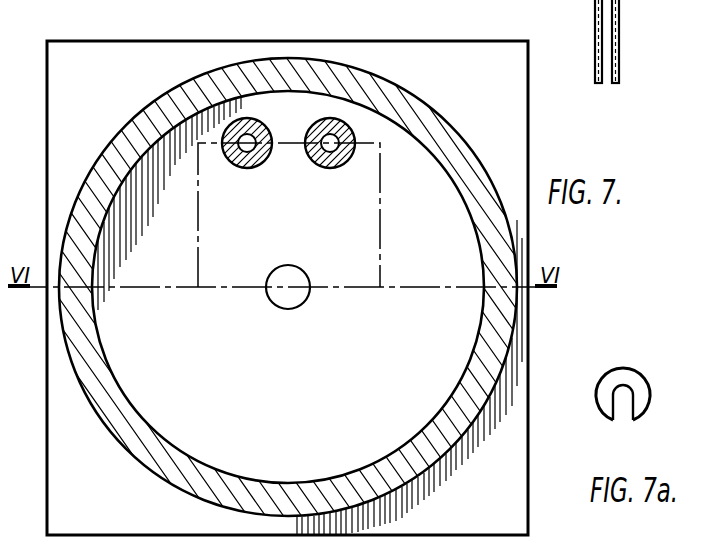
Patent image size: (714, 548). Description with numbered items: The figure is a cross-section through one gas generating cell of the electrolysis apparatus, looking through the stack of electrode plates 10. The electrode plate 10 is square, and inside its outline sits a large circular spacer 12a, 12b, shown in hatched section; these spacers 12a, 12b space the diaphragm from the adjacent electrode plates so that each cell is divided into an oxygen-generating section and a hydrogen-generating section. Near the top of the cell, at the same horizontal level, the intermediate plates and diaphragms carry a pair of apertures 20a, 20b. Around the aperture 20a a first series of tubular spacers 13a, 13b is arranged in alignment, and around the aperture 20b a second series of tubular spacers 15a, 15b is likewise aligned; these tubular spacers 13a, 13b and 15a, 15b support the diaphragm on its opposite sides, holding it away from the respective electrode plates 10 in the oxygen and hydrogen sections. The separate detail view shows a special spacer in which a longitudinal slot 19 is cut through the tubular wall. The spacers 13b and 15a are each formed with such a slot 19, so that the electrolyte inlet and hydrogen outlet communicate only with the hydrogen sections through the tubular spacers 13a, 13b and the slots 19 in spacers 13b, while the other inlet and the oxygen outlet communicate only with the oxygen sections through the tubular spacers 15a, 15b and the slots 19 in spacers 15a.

In FIG. 7, the electrode plate 10 is at (500, 507).
In FIG. 7, the spacer 12a is at (357, 274).
In FIG. 7, the spacer 12b is at (490, 338).
In FIG. 7, the tubular spacer 13a is at (217, 113).
In FIG. 7, the tubular spacer 13b is at (231, 127).
In FIG. 7, the tubular spacer 15a is at (371, 111).
In FIG. 7, the tubular spacer 15b is at (343, 122).
In FIG. 7A, the longitudinal slot 19 is at (621, 407).
In FIG. 7, the aperture 20a is at (247, 146).
In FIG. 7, the aperture 20b is at (330, 146).